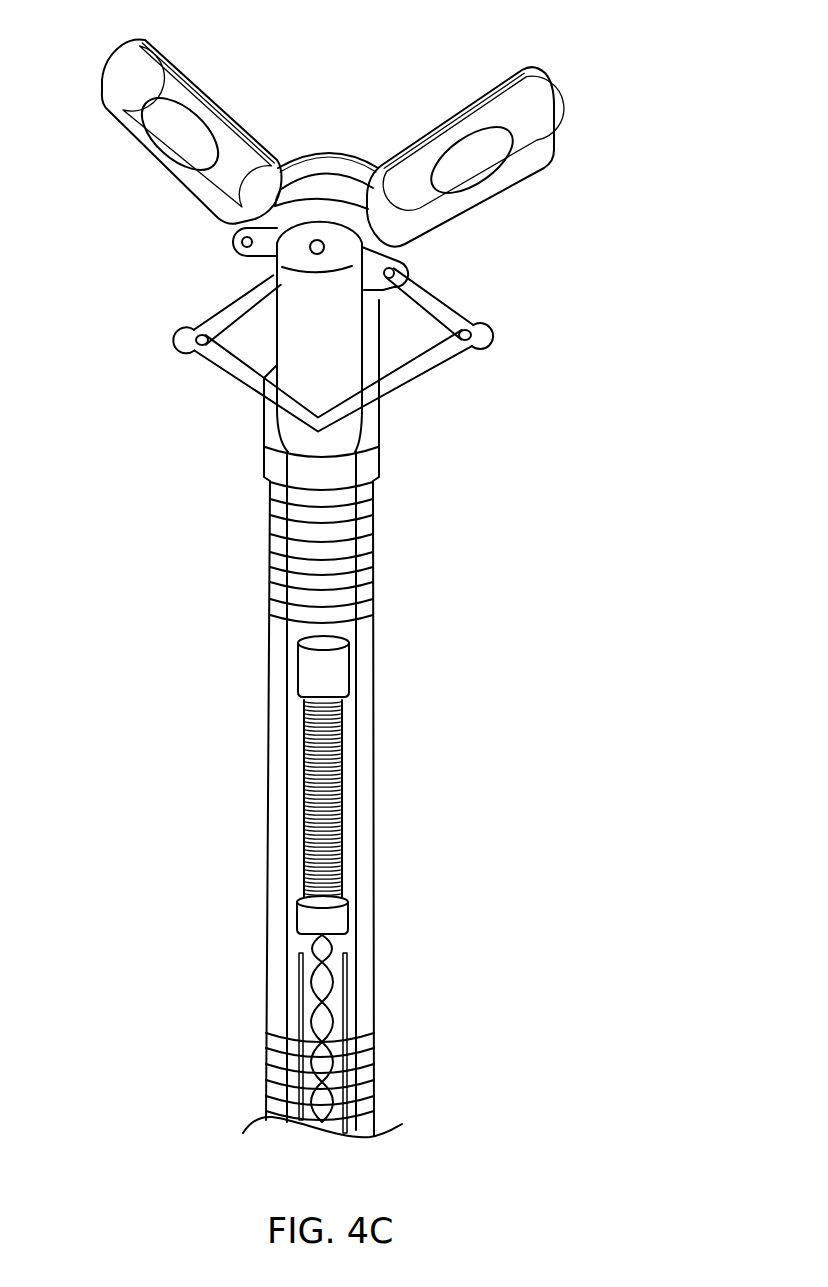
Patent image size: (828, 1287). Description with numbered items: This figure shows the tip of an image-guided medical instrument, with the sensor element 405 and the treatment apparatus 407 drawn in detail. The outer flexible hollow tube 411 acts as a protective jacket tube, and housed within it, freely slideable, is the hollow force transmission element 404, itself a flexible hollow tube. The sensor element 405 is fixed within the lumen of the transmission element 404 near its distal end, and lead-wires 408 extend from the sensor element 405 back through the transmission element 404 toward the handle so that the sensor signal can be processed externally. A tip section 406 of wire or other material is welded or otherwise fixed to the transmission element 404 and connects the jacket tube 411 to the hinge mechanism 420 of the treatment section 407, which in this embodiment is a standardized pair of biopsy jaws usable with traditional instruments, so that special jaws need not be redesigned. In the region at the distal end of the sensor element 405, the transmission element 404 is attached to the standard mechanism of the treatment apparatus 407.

The transmission element 404 is at (357, 890).
The sensor element 405 is at (345, 800).
The tip section 406 is at (186, 272).
The treatment section 407 is at (585, 43).
The lead-wires 408 is at (330, 975).
The flexible hollow tube 411 is at (263, 1000).
The hinge mechanism 420 is at (317, 254).